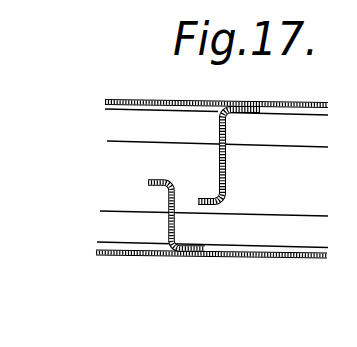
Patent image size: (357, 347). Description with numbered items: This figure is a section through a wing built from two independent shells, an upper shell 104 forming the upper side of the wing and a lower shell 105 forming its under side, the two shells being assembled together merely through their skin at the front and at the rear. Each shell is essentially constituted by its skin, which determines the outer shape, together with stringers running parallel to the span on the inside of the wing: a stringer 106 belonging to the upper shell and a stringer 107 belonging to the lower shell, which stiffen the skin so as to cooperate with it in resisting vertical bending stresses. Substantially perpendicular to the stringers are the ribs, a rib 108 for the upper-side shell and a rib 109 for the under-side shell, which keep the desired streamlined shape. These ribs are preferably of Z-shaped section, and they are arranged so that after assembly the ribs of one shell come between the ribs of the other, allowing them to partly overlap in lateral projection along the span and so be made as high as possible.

The shell 104 is at (145, 99).
The shell 105 is at (245, 258).
The stringer 106 is at (268, 131).
The stringer 107 is at (148, 228).
The rib 108 is at (226, 165).
The rib 109 is at (168, 196).